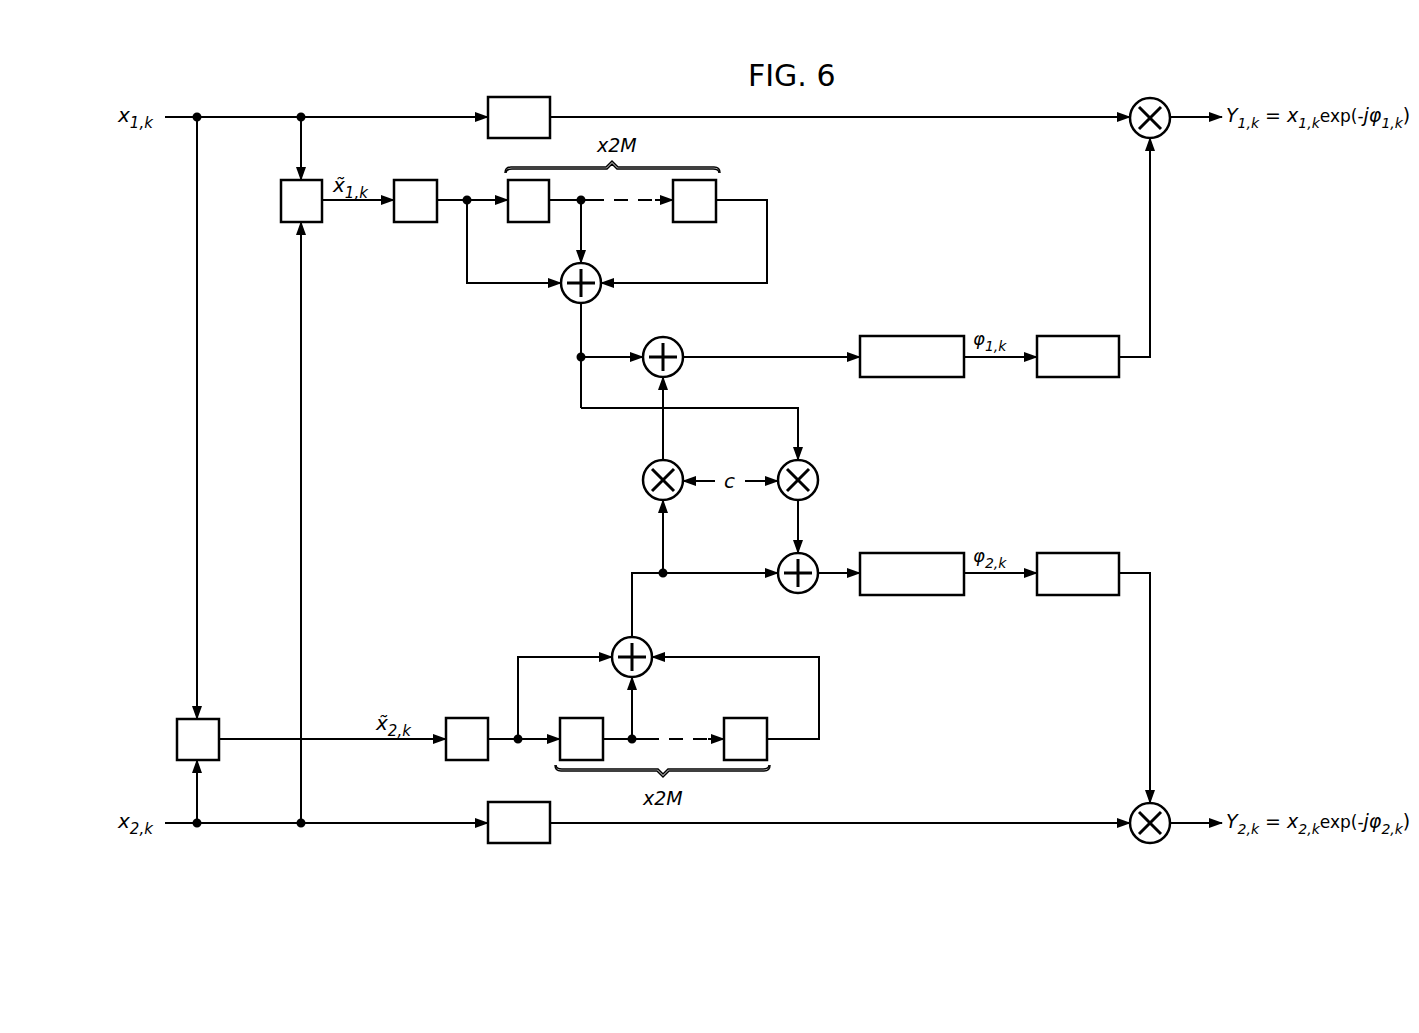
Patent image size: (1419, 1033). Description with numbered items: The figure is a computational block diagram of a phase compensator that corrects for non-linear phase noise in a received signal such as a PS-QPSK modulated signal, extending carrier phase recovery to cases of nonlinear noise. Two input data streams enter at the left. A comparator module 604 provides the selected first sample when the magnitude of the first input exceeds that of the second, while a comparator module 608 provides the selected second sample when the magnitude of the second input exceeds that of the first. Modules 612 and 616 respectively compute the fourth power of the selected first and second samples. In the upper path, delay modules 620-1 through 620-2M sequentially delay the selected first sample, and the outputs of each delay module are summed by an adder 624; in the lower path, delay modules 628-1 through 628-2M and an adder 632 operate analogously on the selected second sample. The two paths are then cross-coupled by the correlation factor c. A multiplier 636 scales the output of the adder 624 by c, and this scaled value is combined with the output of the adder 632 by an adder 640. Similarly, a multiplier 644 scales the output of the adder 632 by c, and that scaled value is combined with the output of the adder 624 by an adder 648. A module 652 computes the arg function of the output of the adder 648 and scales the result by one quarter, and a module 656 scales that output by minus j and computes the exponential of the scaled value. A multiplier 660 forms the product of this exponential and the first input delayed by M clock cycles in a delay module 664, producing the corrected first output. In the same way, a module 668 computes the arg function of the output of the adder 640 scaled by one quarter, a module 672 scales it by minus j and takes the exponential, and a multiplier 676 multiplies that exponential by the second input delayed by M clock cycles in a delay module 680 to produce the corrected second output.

The comparator module 604 is at (281, 196).
The comparator module 608 is at (177, 749).
The fourth-power module 612 is at (415, 180).
The fourth-power module 616 is at (466, 718).
The delay module 620-1 is at (528, 222).
The delay module 620-2M is at (693, 222).
The adder 624 is at (572, 299).
The delay module 628-1 is at (581, 718).
The delay module 628-2M is at (758, 695).
The adder 632 is at (619, 642).
The multiplier 636 is at (810, 495).
The adder 640 is at (810, 589).
The multiplier 644 is at (651, 496).
The adder 648 is at (650, 343).
The module 652 is at (912, 336).
The module 656 is at (1097, 336).
The multiplier 660 is at (1162, 101).
The delay module 664 is at (488, 111).
The module 668 is at (914, 595).
The module 672 is at (1100, 595).
The multiplier 676 is at (1160, 840).
The delay module 680 is at (488, 834).